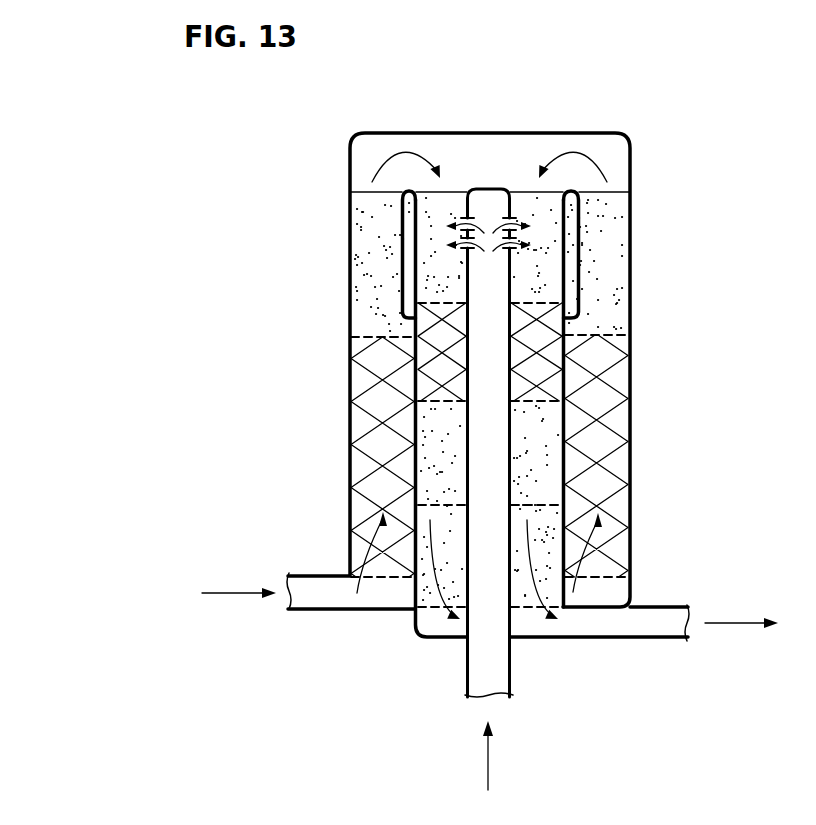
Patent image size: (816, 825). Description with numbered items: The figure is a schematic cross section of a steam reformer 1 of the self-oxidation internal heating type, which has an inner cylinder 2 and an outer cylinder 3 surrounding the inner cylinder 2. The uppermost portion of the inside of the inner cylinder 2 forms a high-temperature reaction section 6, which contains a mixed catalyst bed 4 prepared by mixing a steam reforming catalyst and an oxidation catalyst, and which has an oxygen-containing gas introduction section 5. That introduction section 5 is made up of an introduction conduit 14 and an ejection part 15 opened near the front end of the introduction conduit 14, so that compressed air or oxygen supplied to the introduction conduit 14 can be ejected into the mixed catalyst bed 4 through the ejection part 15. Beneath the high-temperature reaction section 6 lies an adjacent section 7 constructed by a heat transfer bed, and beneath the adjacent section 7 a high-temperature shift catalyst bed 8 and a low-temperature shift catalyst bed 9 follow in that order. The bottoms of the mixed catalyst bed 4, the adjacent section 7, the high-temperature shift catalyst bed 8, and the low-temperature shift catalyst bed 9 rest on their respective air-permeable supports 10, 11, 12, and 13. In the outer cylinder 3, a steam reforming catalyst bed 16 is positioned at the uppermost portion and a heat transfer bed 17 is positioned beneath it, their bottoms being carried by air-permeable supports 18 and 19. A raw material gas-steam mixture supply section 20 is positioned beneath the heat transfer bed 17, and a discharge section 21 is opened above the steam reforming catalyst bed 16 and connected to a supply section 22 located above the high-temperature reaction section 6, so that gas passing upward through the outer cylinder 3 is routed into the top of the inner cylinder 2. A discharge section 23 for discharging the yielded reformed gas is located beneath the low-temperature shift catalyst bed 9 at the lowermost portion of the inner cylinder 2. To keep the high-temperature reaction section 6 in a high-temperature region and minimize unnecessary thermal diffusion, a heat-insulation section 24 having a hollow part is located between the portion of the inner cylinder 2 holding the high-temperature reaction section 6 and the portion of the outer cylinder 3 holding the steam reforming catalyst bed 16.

The steam reformer 1 is at (243, 190).
The inner cylinder 2 is at (399, 462).
The outer cylinder 3 is at (347, 168).
The mixed catalyst bed 4 is at (596, 267).
The oxygen-containing gas introduction section 5 is at (494, 287).
The high-temperature reaction section 6 is at (543, 260).
The adjacent section 7 is at (535, 362).
The high-temperature shift catalyst bed 8 is at (537, 458).
The low-temperature shift catalyst bed 9 is at (540, 550).
The air-permeable support 10 is at (565, 326).
The air-permeable support 11 is at (535, 404).
The air-permeable support 12 is at (538, 493).
The air-permeable support 13 is at (518, 609).
The introduction conduit 14 is at (495, 190).
The ejection part 15 is at (518, 222).
The steam reforming catalyst bed 16 is at (362, 287).
The heat transfer bed 17 is at (363, 418).
The air-permeable support 18 is at (370, 333).
The air-permeable support 19 is at (403, 580).
The raw material gas-steam mixture supply section 20 is at (313, 586).
The discharge section 21 is at (372, 190).
The supply section 22 is at (448, 189).
The discharge section 23 is at (585, 626).
The heat-insulation section 24 is at (398, 233).